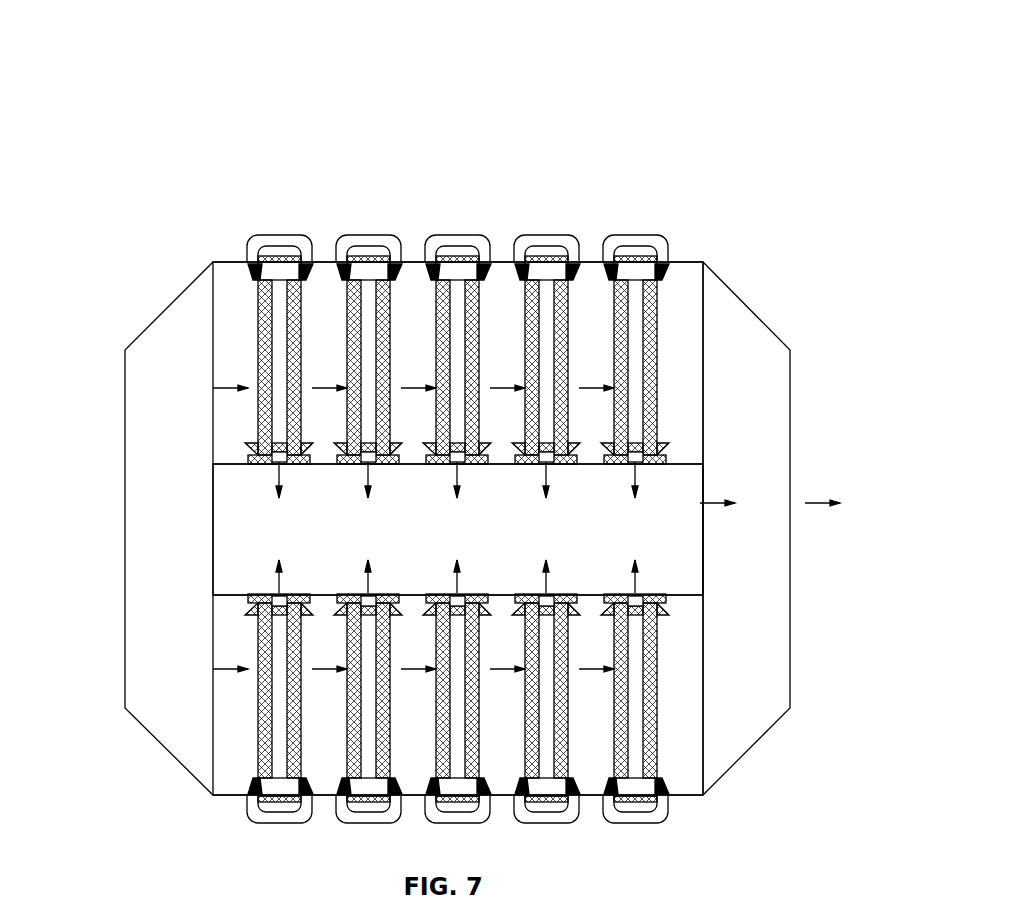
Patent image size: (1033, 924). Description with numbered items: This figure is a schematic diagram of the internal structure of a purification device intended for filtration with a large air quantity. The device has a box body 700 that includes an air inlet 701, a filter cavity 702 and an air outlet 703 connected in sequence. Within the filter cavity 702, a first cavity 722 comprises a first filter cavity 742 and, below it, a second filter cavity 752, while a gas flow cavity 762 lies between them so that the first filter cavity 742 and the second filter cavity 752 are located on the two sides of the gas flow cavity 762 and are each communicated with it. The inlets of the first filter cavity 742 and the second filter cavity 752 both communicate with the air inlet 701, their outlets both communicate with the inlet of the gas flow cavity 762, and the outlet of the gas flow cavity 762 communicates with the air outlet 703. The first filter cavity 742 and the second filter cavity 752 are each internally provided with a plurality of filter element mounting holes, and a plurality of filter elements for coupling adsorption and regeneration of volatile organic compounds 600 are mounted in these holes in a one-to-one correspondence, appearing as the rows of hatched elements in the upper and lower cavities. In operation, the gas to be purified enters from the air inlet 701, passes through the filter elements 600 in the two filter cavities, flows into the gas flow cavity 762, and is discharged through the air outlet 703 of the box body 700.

The box body 700 is at (712, 57).
The first cavity 722 is at (562, 133).
The filter cavity 702 is at (459, 454).
The air inlet 701 is at (215, 375).
The first filter cavity 742 is at (405, 318).
The gas flow cavity 762 is at (570, 537).
The second filter cavity 752 is at (673, 692).
The air outlet 703 is at (710, 457).
The filter element for coupling adsorption and regeneration of volatile organic comp 600 is at (257, 597).